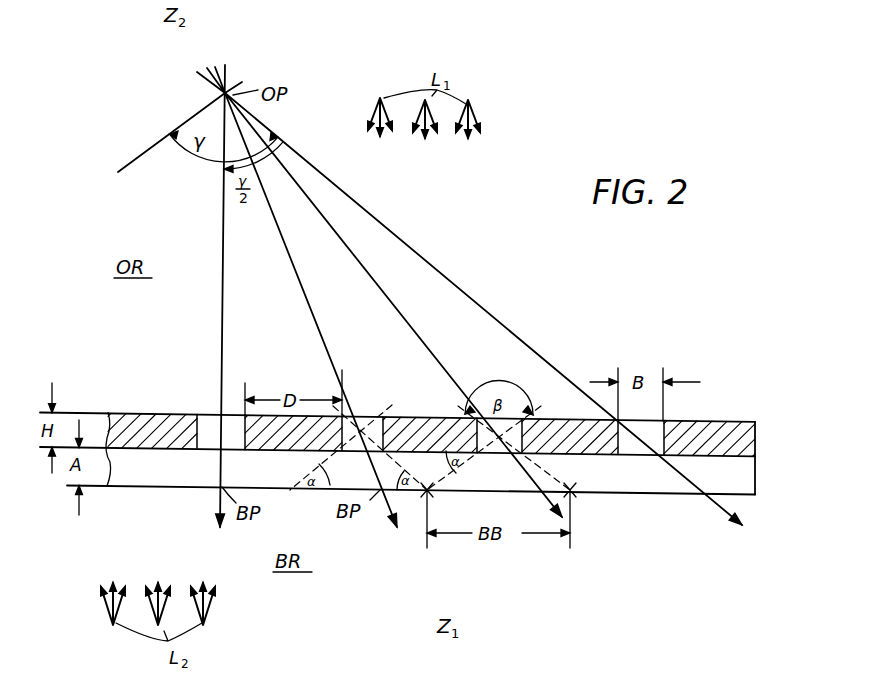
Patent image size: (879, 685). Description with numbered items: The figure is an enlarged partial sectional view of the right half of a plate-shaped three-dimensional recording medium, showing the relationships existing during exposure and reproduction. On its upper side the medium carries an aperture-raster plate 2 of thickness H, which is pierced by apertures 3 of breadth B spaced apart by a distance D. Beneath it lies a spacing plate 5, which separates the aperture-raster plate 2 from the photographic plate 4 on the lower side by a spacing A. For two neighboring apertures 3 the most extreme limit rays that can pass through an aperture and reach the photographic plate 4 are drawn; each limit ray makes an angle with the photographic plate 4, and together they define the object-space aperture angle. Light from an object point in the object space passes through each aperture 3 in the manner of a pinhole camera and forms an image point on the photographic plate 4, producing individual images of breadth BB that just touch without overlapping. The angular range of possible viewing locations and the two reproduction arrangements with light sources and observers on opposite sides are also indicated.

The aperture-raster plate 2 is at (723, 432).
The apertures 3 is at (203, 413).
The photographic plate 4 is at (638, 494).
The spacing plate 5 is at (140, 470).